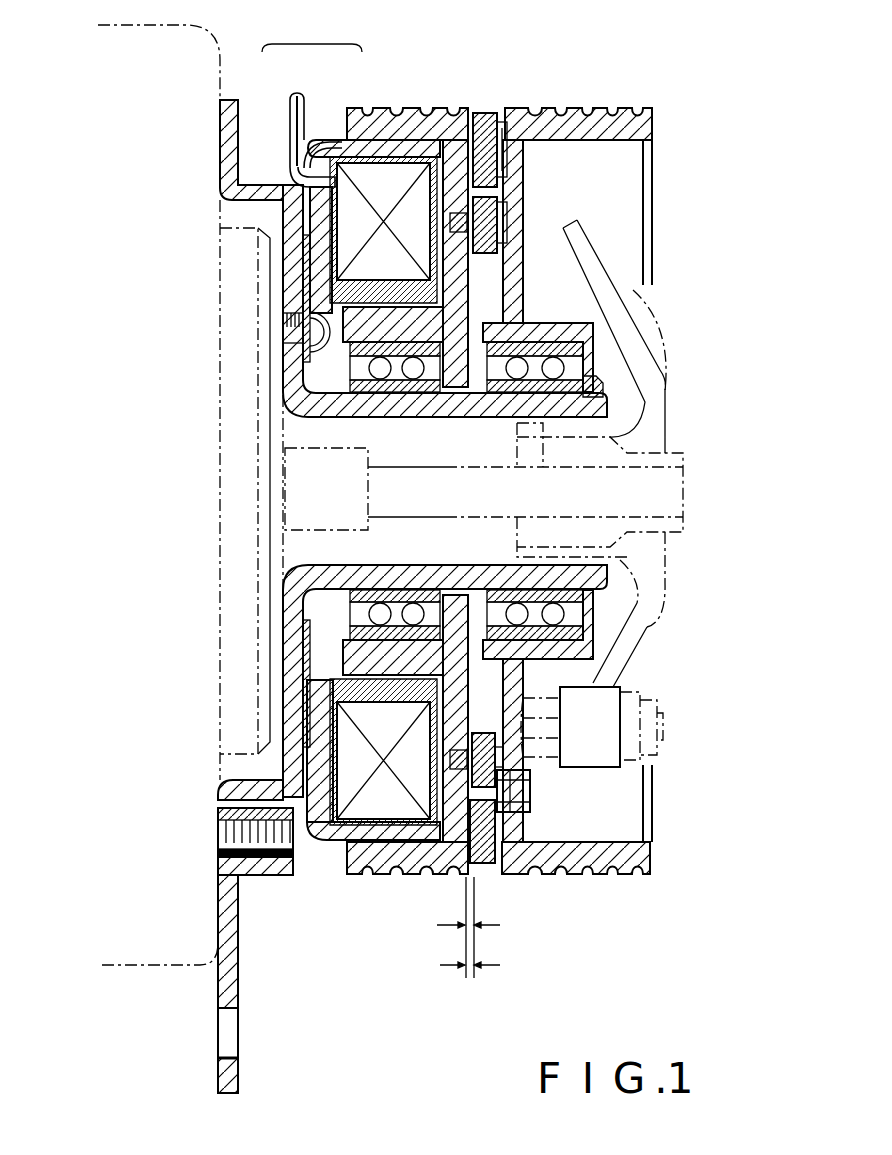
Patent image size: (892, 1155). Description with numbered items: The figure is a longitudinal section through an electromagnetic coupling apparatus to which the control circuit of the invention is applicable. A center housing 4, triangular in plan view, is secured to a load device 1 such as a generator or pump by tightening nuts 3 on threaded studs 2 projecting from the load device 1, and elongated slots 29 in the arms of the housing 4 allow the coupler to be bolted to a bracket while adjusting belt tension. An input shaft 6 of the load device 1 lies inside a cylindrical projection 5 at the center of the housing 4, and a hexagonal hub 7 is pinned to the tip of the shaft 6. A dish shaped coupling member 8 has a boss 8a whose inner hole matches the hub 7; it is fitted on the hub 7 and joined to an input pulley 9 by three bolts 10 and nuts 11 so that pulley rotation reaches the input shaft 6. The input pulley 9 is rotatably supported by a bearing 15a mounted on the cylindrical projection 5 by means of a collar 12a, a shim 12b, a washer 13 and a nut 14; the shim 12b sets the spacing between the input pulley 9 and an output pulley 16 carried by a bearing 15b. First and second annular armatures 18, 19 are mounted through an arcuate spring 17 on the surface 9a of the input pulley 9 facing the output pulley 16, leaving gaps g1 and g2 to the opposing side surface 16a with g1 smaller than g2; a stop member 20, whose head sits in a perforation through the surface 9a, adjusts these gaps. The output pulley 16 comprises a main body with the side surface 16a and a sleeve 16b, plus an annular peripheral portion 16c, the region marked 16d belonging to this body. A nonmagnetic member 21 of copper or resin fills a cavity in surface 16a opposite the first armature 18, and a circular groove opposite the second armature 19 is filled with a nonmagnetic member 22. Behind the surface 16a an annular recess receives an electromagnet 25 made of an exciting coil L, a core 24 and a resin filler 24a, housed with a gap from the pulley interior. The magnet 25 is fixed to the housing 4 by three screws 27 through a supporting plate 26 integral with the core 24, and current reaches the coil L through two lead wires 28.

The load device 1 is at (142, 967).
The threaded studs 2 is at (293, 840).
The nuts 3 is at (258, 875).
The center housing 4 is at (238, 962).
The cylindrical projection 5 is at (404, 417).
The input shaft 6 is at (683, 505).
The hub 7 is at (672, 450).
The coupling member 8 is at (660, 610).
The boss 8a is at (513, 552).
The input pulley 9 is at (574, 463).
The surface of the input pulley 9a is at (504, 297).
The bolts 10 is at (663, 727).
The nuts 11 is at (660, 752).
The collar 12a is at (447, 390).
The shim 12b is at (492, 393).
The washer 13 is at (583, 398).
The nut 14 is at (603, 384).
The bearing 15a is at (580, 634).
The bearing 15b is at (377, 590).
The output pulley 16 is at (392, 462).
The side surface 16a is at (463, 175).
The sleeve 16b is at (365, 313).
The annular peripheral portion 16c is at (407, 107).
The field core plate 16d is at (437, 137).
The spring 17 is at (505, 118).
The first annular armature 18 is at (487, 110).
The second annular armature 19 is at (480, 253).
The stop member 20 is at (527, 770).
The nonmagnetic member 21 is at (420, 823).
The nonmagnetic member 22 is at (453, 780).
The core 24 is at (317, 143).
The filler 24a is at (343, 160).
The electromagnet 25 is at (312, 98).
The supporting plate 26 is at (300, 250).
The screws 27 is at (285, 330).
The lead wires 28 is at (290, 123).
The elongated slots 29 is at (238, 1058).
The exciting coil L is at (340, 150).
The gap g1 is at (479, 927).
The gap g2 is at (482, 963).